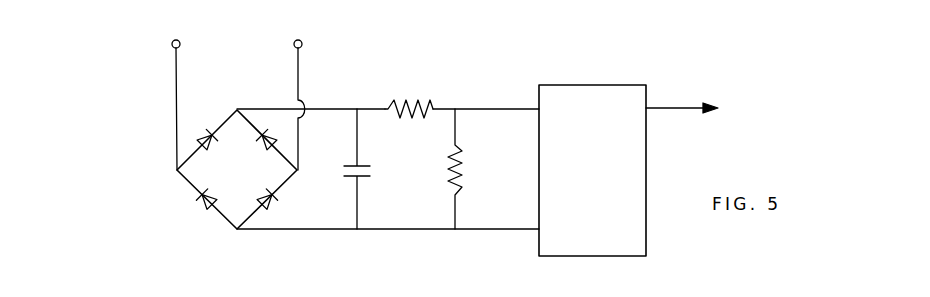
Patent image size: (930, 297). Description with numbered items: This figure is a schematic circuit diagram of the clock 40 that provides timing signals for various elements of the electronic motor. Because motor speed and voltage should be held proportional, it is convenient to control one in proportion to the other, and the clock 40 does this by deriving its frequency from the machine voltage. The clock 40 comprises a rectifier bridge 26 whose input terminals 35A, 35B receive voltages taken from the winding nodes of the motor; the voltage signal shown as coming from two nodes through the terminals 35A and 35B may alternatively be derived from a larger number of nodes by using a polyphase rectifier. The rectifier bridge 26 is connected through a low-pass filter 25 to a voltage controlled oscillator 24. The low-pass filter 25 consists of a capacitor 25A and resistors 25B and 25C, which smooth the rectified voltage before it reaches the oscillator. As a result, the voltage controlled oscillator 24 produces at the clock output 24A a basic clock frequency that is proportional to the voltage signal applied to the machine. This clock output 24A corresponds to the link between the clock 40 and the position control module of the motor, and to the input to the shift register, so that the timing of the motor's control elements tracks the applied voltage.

The clock 40 is at (548, 42).
The terminal 35A is at (171, 44).
The terminal 35B is at (306, 42).
The rectifier bridge 26 is at (254, 215).
The low-pass filter 25 is at (445, 107).
The capacitor 25A is at (346, 186).
The resistor 25B is at (403, 96).
The resistor 25C is at (467, 178).
The voltage controlled oscillator 24 is at (580, 85).
The clock output 24A is at (687, 108).